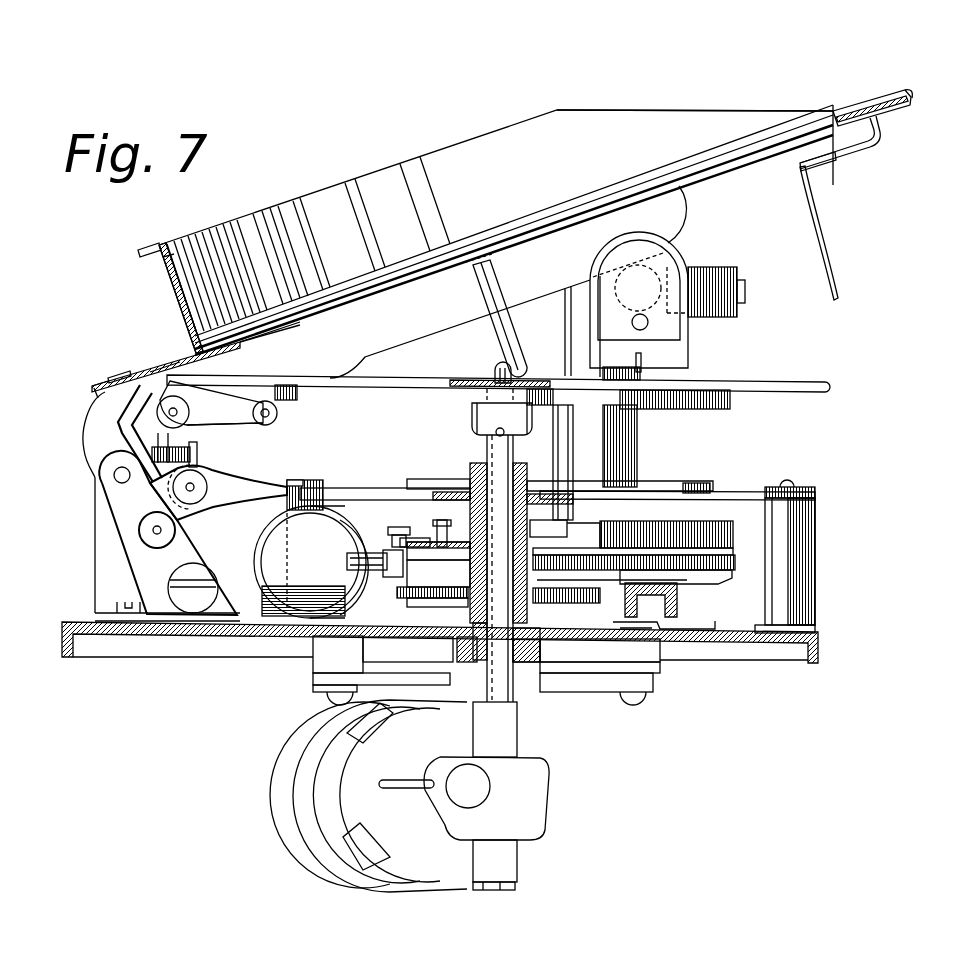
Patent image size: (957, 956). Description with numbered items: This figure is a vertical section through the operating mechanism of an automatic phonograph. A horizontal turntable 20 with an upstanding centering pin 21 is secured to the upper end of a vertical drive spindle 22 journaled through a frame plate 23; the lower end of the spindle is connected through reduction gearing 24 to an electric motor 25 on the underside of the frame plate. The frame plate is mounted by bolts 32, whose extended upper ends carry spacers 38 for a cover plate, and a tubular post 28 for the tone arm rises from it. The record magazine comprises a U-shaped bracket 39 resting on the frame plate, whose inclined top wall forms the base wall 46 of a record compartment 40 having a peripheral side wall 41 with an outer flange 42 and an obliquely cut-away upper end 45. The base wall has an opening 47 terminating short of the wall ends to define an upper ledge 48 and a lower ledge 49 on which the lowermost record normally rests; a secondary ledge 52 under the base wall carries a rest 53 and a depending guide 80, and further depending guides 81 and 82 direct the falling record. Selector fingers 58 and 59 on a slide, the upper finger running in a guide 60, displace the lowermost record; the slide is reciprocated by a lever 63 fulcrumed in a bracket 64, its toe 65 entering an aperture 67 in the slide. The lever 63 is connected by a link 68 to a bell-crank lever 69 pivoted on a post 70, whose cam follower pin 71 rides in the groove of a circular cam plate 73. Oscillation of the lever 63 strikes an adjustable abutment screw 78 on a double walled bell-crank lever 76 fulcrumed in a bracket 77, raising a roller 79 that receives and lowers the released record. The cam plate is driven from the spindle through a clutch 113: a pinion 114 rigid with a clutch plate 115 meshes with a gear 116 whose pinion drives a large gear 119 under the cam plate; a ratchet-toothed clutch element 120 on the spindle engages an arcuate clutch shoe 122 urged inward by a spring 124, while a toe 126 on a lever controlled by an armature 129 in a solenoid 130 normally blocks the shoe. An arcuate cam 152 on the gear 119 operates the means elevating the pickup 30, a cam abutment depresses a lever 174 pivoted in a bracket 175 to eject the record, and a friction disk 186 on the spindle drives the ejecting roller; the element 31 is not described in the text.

The record compartment 40 is at (330, 195).
The peripheral side wall 41 is at (166, 268).
The outer peripheral flange 42 is at (148, 249).
The obliquely cut-away portion 45 is at (693, 112).
The base wall 46 is at (158, 366).
The opening 47 is at (337, 311).
The upper ledge 48 is at (833, 178).
The lower ledge 49 is at (230, 360).
The secondary ledge 52 is at (853, 150).
The rest 53 is at (803, 165).
The upper selector finger 58 is at (910, 112).
The guide 60 is at (912, 100).
The depending guide 80 is at (824, 212).
The frame or bracket 39 is at (693, 215).
The pickup 30 is at (682, 335).
The pin 31 is at (642, 358).
The depending guides 81 is at (520, 326).
The centering pin 21 is at (497, 366).
The turntable 20 is at (733, 400).
The drive spindle 22 is at (513, 700).
The friction disk 186 is at (468, 490).
The coiled tension spring 124 is at (452, 498).
The bell-crank lever 69 is at (392, 499).
The clutch 113 is at (440, 556).
The circular clutch plate 115 is at (457, 575).
The gear 116 is at (408, 600).
The pinion 114 is at (455, 606).
The clutch element 120 is at (445, 535).
The arcuate clutch shoe 122 is at (430, 540).
The toe 126 is at (392, 538).
The armature 129 is at (370, 572).
The post 70 is at (262, 542).
The solenoid 130 is at (258, 557).
The depending guides 82 is at (187, 392).
The roller 79 is at (278, 415).
The double walled bell-crank lever 76 is at (235, 423).
The bracket 77 is at (153, 433).
The adjustable abutment screw 78 is at (200, 446).
The link 68 is at (238, 478).
The bracket 64 is at (155, 602).
The lever 63 is at (88, 447).
The lower selector finger 59 is at (183, 364).
The toe 65 is at (118, 372).
The aperture 67 is at (93, 386).
The tubular post 28 is at (637, 444).
The spacers 38 is at (798, 585).
The bolts 32 is at (792, 483).
The cam follower pin 71 is at (567, 528).
The circular cam plate 73 is at (728, 520).
The large gear 119 is at (735, 562).
The arcuate cam 152 is at (718, 576).
The lever 174 is at (637, 584).
The bracket 175 is at (700, 621).
The frame plate 23 is at (820, 640).
The reduction gearing 24 is at (548, 784).
The electric motor 25 is at (300, 752).